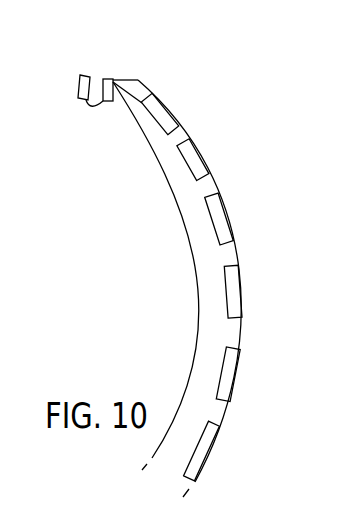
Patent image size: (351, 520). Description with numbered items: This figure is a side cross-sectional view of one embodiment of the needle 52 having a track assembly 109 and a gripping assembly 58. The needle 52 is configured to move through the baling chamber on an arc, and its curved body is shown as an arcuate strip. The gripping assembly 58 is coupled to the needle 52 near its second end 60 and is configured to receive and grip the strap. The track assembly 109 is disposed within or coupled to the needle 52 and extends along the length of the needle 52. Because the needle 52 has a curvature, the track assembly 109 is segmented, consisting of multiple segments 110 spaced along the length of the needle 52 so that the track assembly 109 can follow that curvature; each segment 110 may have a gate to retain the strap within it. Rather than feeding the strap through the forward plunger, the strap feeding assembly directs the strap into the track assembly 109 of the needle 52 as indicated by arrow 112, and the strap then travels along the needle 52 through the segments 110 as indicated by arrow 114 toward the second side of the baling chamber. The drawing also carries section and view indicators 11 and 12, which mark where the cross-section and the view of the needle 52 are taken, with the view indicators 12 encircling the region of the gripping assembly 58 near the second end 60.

The section line 11- 11 is at (177, 308).
The view direction 12 is at (58, 150).
The needle 52 is at (197, 274).
The gripping assembly 58 is at (80, 90).
The second end 60 is at (211, 110).
The track assembly 109 is at (211, 146).
The segments 110 is at (202, 168).
The arrow 112 is at (122, 28).
The arrow 114 is at (166, 121).